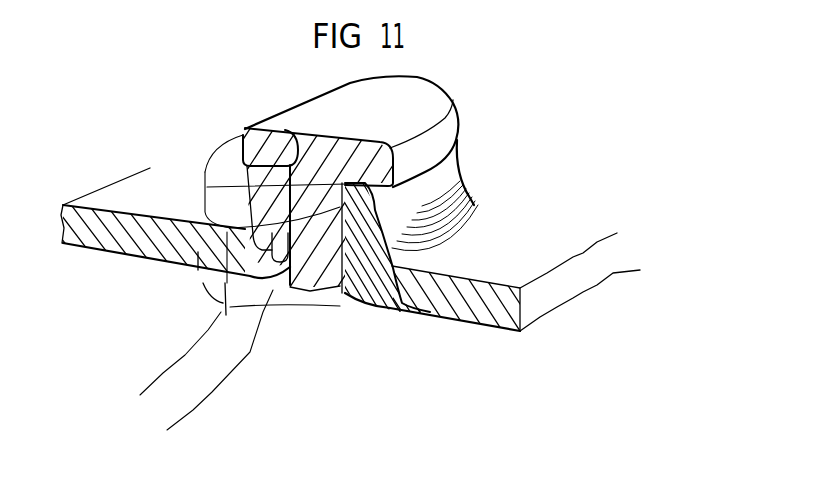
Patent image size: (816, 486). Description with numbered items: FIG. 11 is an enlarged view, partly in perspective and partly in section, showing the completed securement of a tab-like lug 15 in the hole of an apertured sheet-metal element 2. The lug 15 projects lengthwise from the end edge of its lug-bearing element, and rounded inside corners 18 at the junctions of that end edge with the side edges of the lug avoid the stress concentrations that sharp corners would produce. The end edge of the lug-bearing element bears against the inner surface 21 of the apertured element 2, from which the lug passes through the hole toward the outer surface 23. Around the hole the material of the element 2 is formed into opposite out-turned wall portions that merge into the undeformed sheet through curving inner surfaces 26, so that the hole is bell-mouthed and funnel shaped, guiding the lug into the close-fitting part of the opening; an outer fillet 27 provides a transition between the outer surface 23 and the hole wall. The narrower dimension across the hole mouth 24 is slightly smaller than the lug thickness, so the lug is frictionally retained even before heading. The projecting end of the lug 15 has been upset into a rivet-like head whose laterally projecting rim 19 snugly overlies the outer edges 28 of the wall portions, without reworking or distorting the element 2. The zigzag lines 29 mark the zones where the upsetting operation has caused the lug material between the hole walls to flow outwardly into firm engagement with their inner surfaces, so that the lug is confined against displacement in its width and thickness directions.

The apertured element 2 is at (532, 307).
The tab-like lug 15 is at (302, 284).
The rounded inside corners 18 is at (227, 312).
The laterally projecting rim 19 is at (460, 118).
The inner surface 21 is at (453, 322).
The outer surface 23 is at (537, 232).
The hole mouth 24 is at (278, 150).
The curving inner surfaces 26 is at (358, 296).
The outer fillet 27 is at (440, 228).
The outer edges 28 is at (272, 150).
The zigzag lines 29 is at (342, 200).